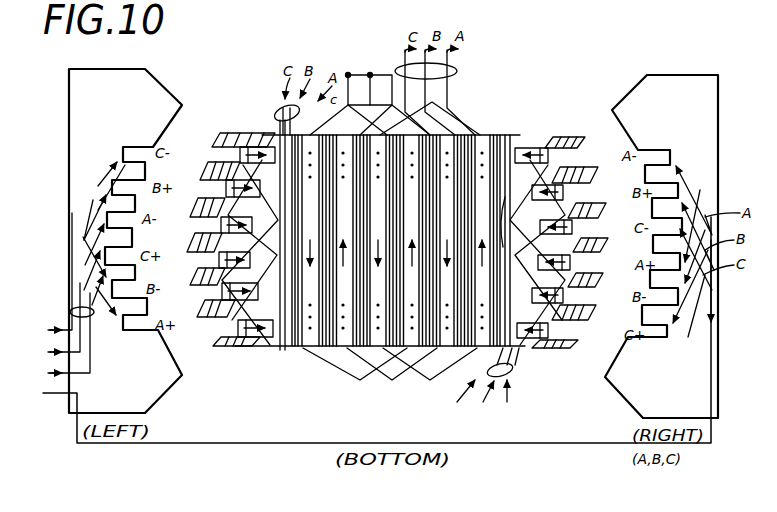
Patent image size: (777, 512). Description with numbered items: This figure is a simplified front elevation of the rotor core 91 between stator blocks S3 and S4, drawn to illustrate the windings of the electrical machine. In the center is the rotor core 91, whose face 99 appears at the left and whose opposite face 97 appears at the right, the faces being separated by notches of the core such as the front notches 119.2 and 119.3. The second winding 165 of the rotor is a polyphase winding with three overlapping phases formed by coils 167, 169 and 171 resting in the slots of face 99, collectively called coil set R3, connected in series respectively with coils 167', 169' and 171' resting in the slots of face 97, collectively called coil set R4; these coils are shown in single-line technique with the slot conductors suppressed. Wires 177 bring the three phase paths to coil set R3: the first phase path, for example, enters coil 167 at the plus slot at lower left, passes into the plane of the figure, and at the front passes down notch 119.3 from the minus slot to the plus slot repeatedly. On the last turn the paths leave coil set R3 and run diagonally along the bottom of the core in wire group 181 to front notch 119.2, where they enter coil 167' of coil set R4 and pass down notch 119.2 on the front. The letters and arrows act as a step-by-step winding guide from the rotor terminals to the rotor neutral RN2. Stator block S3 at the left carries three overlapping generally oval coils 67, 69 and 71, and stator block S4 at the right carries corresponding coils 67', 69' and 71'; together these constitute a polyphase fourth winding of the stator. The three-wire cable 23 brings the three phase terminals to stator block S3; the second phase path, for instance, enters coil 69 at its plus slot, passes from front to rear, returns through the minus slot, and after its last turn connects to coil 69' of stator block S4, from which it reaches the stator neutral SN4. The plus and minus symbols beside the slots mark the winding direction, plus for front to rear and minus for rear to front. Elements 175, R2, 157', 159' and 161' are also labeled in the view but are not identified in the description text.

The three wire cable 23 is at (74, 308).
The winding coil 67 is at (54, 252).
The winding coil 69 is at (60, 206).
The winding coil 71 is at (101, 150).
The coil 67' is at (695, 152).
The coil 69' is at (735, 191).
The coil 71' is at (694, 343).
The rotor core 91 is at (515, 165).
The rotor face 97 is at (586, 183).
The rotor face 99 is at (190, 165).
The notch 119.2 is at (508, 148).
The notch 119.3 is at (280, 350).
The connection 157' is at (430, 391).
The connection 159' is at (390, 385).
The connection 161' is at (315, 371).
The second winding 165 is at (510, 456).
The coil 167 is at (236, 369).
The coil 167' is at (602, 281).
The coil 169 is at (201, 352).
The coil 169' is at (598, 319).
The coil 171 is at (189, 276).
The coil 171' is at (567, 360).
The lead group 175 is at (457, 72).
The wires 177 is at (283, 108).
The wire group 181 is at (505, 362).
The rotor section R2 is at (453, 170).
The coil set R3 is at (236, 150).
The coil set R4 is at (537, 160).
The rotor neutral RN2 is at (372, 54).
The stator block S3 is at (140, 391).
The stator block S4 is at (692, 125).
The wye neutral SN4 is at (364, 330).